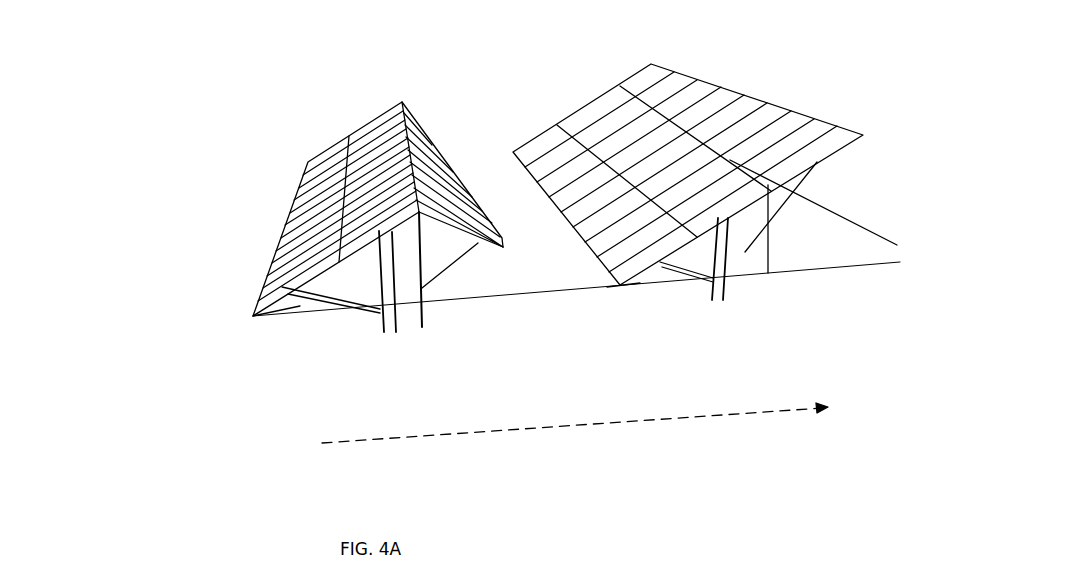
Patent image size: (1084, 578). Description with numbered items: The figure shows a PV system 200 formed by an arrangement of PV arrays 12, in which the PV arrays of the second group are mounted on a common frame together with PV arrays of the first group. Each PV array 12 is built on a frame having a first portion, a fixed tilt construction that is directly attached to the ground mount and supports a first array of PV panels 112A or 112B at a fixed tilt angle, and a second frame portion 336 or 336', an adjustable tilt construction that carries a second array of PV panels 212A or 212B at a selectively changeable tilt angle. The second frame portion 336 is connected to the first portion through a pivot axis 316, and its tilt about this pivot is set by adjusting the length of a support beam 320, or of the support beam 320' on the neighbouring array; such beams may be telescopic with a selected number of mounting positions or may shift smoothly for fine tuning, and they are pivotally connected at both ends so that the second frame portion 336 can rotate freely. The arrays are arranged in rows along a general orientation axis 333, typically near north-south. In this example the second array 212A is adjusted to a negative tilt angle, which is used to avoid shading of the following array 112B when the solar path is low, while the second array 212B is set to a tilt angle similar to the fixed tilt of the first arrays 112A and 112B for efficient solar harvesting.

The system 200 is at (148, 68).
The PV array 12 is at (369, 72).
The first array of PV panels 112A is at (355, 130).
The second array of PV panels 212A is at (440, 133).
The first array of PV panels 112B is at (647, 133).
The second array of PV panels 212B is at (701, 90).
The pivot axis 316 is at (430, 283).
The support beam 320 is at (484, 313).
The support beam 320' is at (795, 263).
The second frame portion 336 is at (496, 285).
The second frame portion 336' is at (834, 211).
The general orientation axis 333 is at (613, 425).